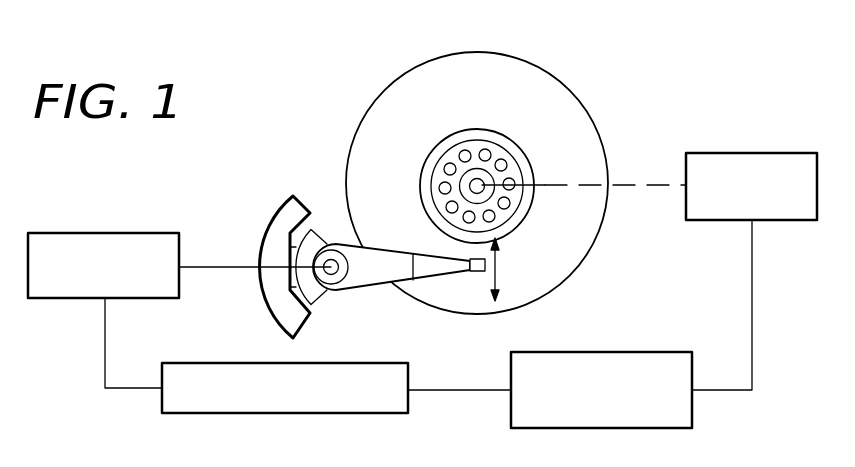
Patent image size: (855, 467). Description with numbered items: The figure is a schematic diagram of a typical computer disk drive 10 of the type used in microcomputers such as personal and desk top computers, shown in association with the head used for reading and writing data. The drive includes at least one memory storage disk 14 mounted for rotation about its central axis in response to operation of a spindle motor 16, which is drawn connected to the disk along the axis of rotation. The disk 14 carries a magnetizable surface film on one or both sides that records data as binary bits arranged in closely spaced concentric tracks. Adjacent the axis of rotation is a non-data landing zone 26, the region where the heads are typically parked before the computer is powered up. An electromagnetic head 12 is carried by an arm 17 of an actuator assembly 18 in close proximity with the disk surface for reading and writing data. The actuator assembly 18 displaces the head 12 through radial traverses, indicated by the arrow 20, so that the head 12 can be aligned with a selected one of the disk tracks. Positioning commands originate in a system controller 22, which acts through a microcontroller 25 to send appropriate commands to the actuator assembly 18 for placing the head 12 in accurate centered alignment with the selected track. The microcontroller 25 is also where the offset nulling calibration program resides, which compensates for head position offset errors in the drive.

The computer disk drive 10 is at (624, 85).
The electromagnetic head 12 is at (473, 272).
The memory storage disk 14 is at (592, 249).
The spindle motor 16 is at (785, 153).
The arm 17 is at (378, 270).
The actuator assembly 18 is at (117, 233).
The arrow 20 is at (497, 265).
The system controller 22 is at (620, 352).
The microcontroller 25 is at (247, 413).
The non-data landing zone 26 is at (478, 130).